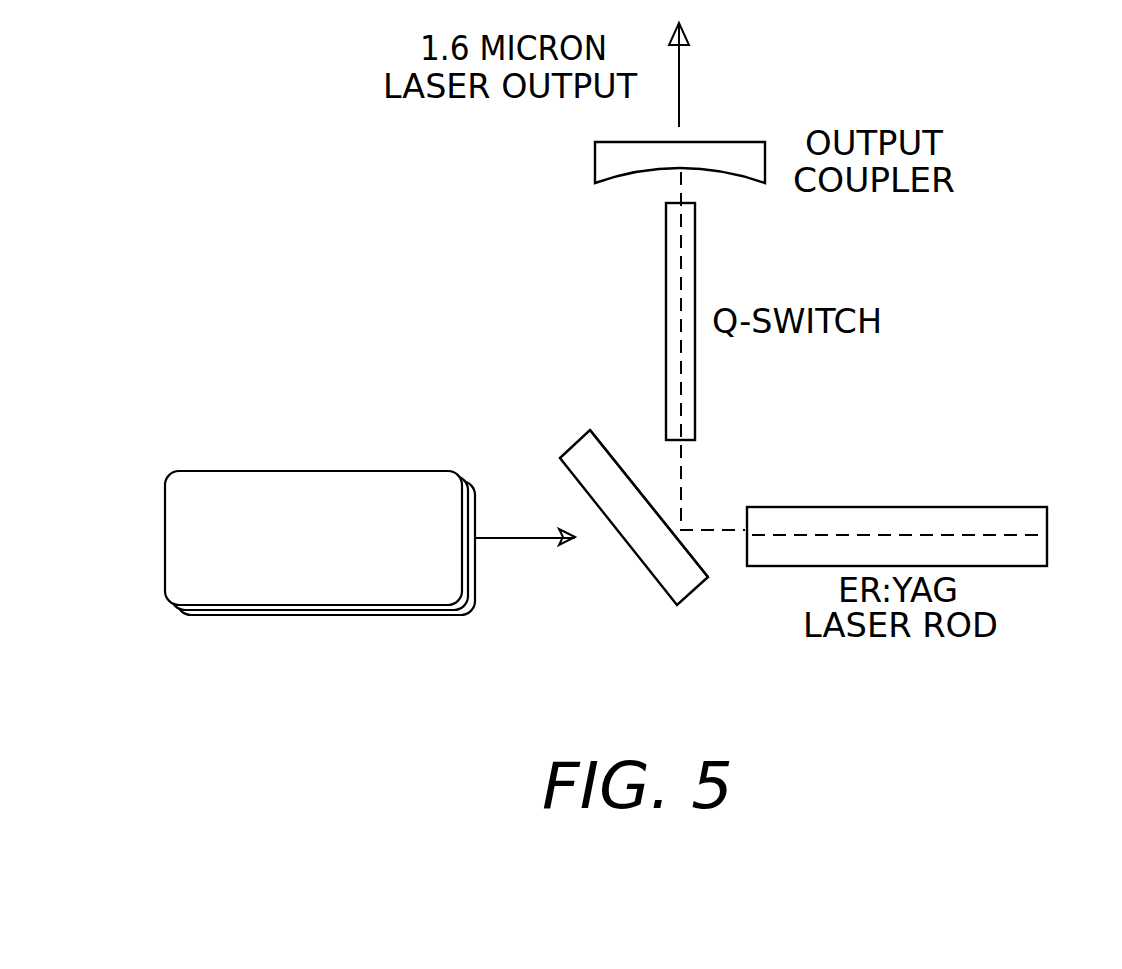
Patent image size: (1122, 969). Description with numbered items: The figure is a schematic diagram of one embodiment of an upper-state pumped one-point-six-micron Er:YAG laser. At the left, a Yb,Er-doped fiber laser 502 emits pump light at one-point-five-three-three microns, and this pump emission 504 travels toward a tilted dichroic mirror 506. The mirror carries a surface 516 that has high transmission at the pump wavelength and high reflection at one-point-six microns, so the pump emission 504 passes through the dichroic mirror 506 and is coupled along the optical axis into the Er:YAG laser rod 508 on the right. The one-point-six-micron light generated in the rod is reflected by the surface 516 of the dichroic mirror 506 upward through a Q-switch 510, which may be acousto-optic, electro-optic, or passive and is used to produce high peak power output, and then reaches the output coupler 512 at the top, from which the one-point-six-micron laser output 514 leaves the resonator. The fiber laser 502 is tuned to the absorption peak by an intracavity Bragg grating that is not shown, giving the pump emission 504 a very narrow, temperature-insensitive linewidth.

The Yb,Er-doped fiber laser 502 is at (310, 615).
The pump emission 504 is at (500, 540).
The dichroic mirror 506 is at (653, 575).
The Er:YAG laser rod 508 is at (990, 507).
The Q-switch 510 is at (666, 325).
The output coupler 512 is at (736, 138).
The 1.6 micron laser output 514 is at (682, 93).
The surface 516 is at (610, 450).